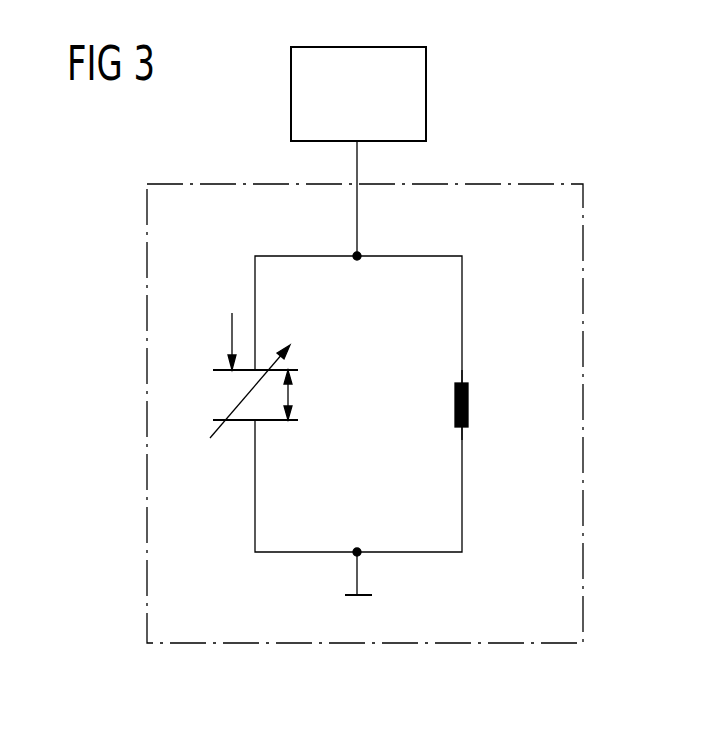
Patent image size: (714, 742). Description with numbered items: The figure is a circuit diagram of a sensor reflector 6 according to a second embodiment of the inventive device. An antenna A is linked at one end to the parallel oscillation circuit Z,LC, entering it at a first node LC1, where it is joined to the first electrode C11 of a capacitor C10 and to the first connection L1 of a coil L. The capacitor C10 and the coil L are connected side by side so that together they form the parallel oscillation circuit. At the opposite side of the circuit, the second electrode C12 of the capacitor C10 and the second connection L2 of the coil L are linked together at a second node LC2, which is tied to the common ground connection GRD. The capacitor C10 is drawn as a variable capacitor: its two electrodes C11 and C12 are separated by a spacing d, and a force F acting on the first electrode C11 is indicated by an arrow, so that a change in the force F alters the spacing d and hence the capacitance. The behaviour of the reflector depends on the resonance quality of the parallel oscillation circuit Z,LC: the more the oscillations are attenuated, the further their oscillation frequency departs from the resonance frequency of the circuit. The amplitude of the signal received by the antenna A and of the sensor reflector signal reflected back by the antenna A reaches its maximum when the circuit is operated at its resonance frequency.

The antenna A is at (426, 95).
The parallel oscillation circuit Z,LC is at (418, 643).
The sensor reflector 6 is at (110, 592).
The first connection node of the parallel oscillation circuit LC1 is at (357, 256).
The second connection node of the parallel oscillation circuit LC2 is at (357, 552).
The common ground connection GRD is at (359, 593).
The capacitor C10 is at (277, 420).
The first electrode C11 is at (257, 370).
The second electrode C12 is at (252, 420).
The electrode spacing d is at (292, 396).
The force F is at (222, 308).
The coil L is at (468, 409).
The first connection of the coil L1 is at (462, 383).
The second connection of the coil L2 is at (462, 427).